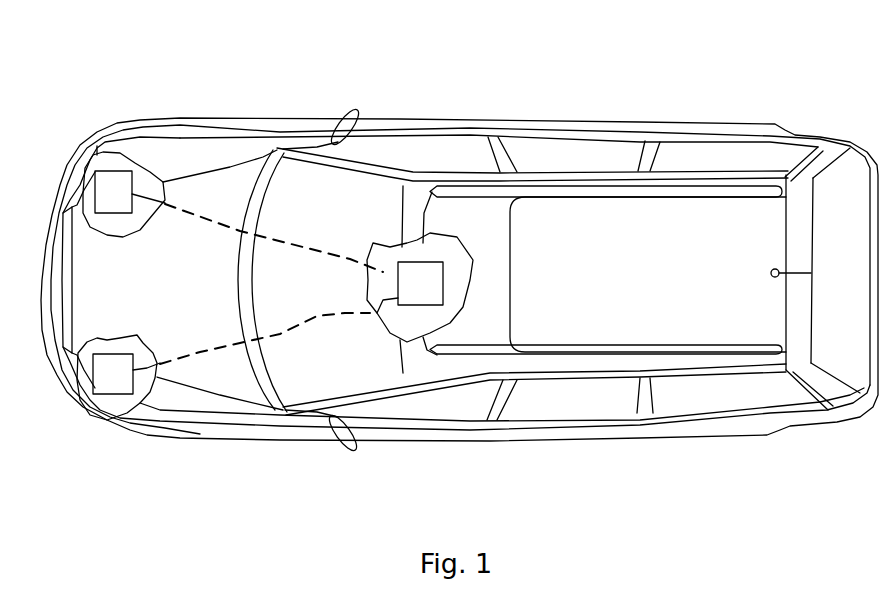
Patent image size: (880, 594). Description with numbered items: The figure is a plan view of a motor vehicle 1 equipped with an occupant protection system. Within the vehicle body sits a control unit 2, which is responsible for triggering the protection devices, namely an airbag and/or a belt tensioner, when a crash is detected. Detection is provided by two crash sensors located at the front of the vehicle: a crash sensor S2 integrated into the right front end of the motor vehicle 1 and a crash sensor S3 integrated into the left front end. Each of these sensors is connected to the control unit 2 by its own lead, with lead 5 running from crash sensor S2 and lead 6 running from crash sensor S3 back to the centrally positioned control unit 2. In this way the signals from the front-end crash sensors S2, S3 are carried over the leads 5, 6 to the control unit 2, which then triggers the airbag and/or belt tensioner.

The motor vehicle 1 is at (664, 118).
The control unit 2 is at (422, 277).
The lead 5 is at (383, 272).
The lead 6 is at (200, 351).
The crash sensor S2 is at (117, 194).
The crash sensor S3 is at (105, 374).